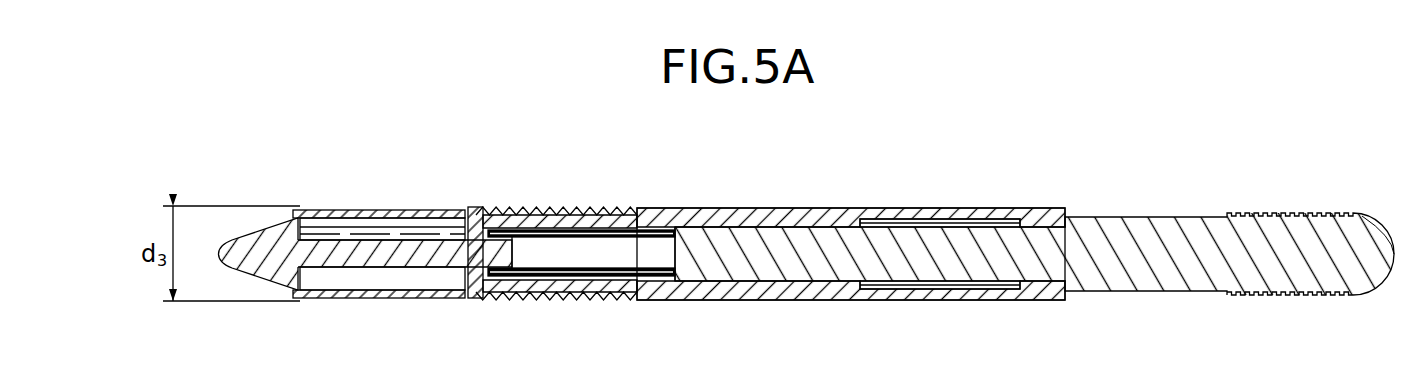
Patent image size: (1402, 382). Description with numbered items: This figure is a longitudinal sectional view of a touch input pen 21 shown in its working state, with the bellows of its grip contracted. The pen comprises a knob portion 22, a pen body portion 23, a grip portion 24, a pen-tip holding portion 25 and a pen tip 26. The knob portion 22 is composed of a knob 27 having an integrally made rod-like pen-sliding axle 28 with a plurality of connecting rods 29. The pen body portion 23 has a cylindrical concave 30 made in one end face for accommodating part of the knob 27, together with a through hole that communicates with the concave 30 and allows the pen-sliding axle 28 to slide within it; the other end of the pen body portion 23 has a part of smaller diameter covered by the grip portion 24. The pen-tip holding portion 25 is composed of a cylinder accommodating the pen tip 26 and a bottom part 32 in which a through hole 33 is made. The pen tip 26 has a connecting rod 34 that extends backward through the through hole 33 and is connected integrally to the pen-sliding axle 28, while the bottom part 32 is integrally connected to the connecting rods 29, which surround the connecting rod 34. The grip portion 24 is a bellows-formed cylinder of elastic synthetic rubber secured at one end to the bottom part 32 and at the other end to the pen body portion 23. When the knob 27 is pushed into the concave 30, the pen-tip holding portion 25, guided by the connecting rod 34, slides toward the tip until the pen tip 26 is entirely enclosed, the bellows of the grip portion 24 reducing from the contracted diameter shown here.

The touch input pen 21 is at (869, 204).
The knob portion 22 is at (1316, 212).
The pen body portion 23 is at (782, 208).
The grip portion 24 is at (539, 205).
The pen-tip holding portion 25 is at (321, 210).
The pen tip 26 is at (238, 240).
The knob 27 is at (1185, 273).
The pen-sliding axle 28 is at (950, 265).
The connecting rods 29 is at (612, 232).
The cylindrical concave 30 is at (960, 221).
The bottom part 32 is at (459, 278).
The through hole 33 is at (478, 208).
The connecting rod 34 is at (397, 250).